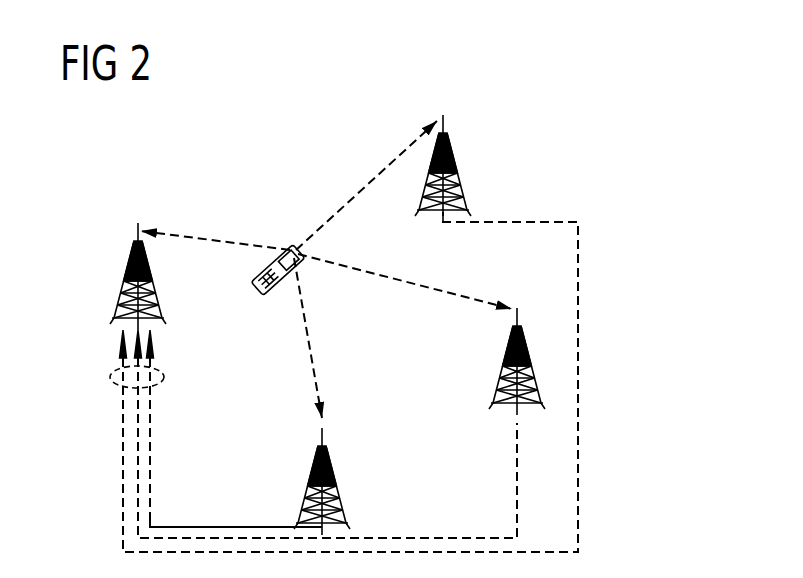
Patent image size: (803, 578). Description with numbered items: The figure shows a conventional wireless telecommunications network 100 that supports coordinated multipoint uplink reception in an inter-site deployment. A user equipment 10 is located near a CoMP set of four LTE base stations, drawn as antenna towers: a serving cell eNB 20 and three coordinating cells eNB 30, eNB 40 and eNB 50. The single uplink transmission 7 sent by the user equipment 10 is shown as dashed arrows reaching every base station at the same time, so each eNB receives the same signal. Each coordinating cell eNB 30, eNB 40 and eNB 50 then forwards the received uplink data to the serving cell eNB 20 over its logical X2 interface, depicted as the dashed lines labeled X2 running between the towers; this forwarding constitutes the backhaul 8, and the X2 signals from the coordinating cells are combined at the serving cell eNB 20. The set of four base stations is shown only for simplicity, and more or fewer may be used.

The wireless telecommunications network supporting CoMP uplink reception 100 is at (538, 112).
The UL transmission 7 is at (262, 247).
The backhaul on X2 interface 8 is at (115, 373).
The user equipment (UE) 10 is at (262, 290).
The serving cell eNB 20 is at (125, 278).
The coordinating cell eNB 30 is at (455, 158).
The coordinating cell eNB 40 is at (500, 377).
The coordinating cell eNB 50 is at (312, 472).